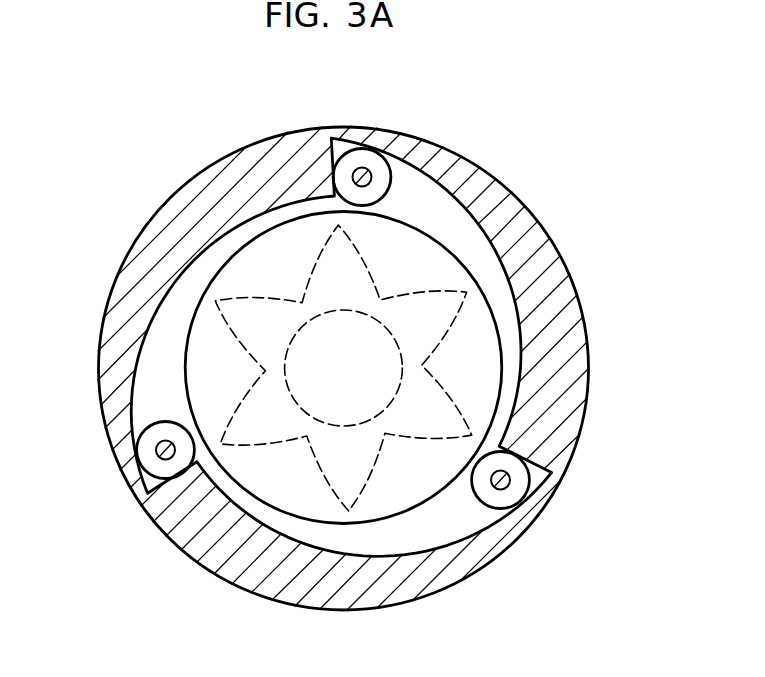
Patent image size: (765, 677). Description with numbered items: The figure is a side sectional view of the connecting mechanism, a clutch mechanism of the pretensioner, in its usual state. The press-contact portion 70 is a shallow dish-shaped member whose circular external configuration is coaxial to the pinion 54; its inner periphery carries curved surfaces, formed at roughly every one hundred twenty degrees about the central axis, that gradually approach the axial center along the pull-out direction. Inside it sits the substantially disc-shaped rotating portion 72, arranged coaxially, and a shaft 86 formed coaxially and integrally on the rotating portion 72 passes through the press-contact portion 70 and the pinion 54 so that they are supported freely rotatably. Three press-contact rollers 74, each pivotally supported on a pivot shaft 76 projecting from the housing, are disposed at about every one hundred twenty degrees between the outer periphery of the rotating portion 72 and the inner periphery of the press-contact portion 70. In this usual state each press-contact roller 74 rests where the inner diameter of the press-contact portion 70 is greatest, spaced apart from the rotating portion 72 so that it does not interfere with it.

The press-contact portion 70 is at (589, 348).
The rotating portion 72 is at (480, 290).
The press-contact roller 74 is at (391, 180).
The pivot shaft 76 is at (363, 172).
The pinion 54 is at (448, 392).
The shaft 86 is at (307, 437).